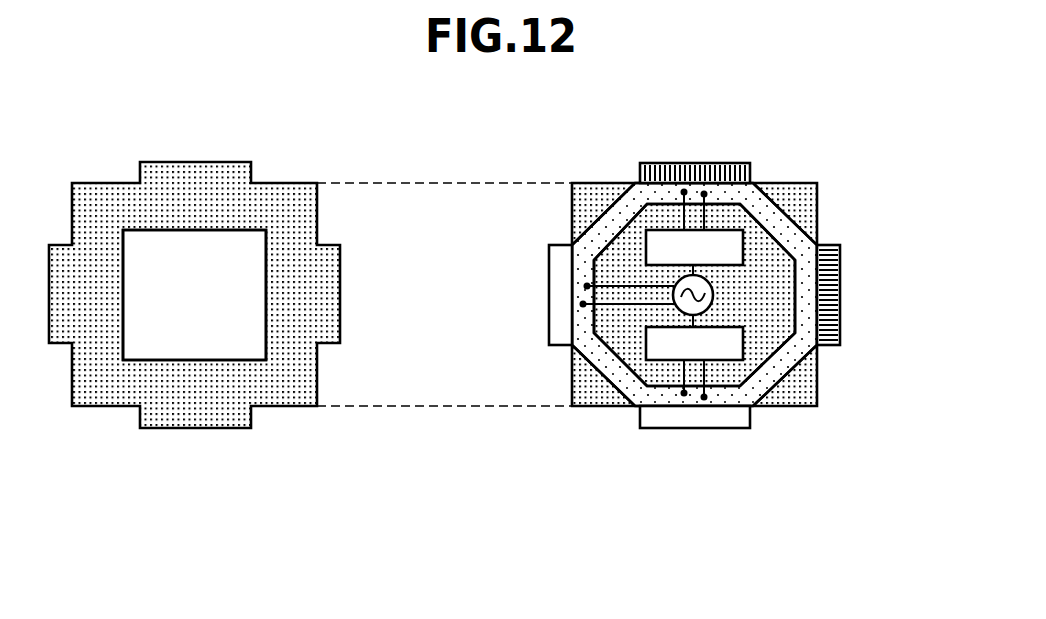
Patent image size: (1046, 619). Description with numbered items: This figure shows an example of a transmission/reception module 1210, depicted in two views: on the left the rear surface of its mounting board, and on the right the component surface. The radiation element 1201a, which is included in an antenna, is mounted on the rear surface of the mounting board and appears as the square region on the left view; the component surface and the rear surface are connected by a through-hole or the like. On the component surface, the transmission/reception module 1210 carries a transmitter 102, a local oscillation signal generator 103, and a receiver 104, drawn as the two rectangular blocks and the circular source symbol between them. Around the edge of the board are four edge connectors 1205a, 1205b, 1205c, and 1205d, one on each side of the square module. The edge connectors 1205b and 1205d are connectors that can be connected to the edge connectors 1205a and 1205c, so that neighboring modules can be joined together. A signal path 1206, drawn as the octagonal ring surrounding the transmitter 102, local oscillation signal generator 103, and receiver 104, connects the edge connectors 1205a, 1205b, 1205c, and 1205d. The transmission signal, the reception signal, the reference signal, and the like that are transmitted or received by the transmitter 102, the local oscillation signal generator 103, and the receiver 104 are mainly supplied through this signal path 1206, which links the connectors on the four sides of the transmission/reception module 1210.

The transmission/reception module 1210 is at (103, 183).
The radiation element 1201a is at (235, 252).
The transmitter 102 is at (640, 243).
The local oscillation signal generator 103 is at (718, 295).
The receiver 104 is at (646, 347).
The edge connector 1205a is at (842, 293).
The edge connector 1205b is at (548, 292).
The edge connector 1205c is at (692, 162).
The edge connector 1205d is at (693, 429).
The signal path 1206 is at (773, 367).